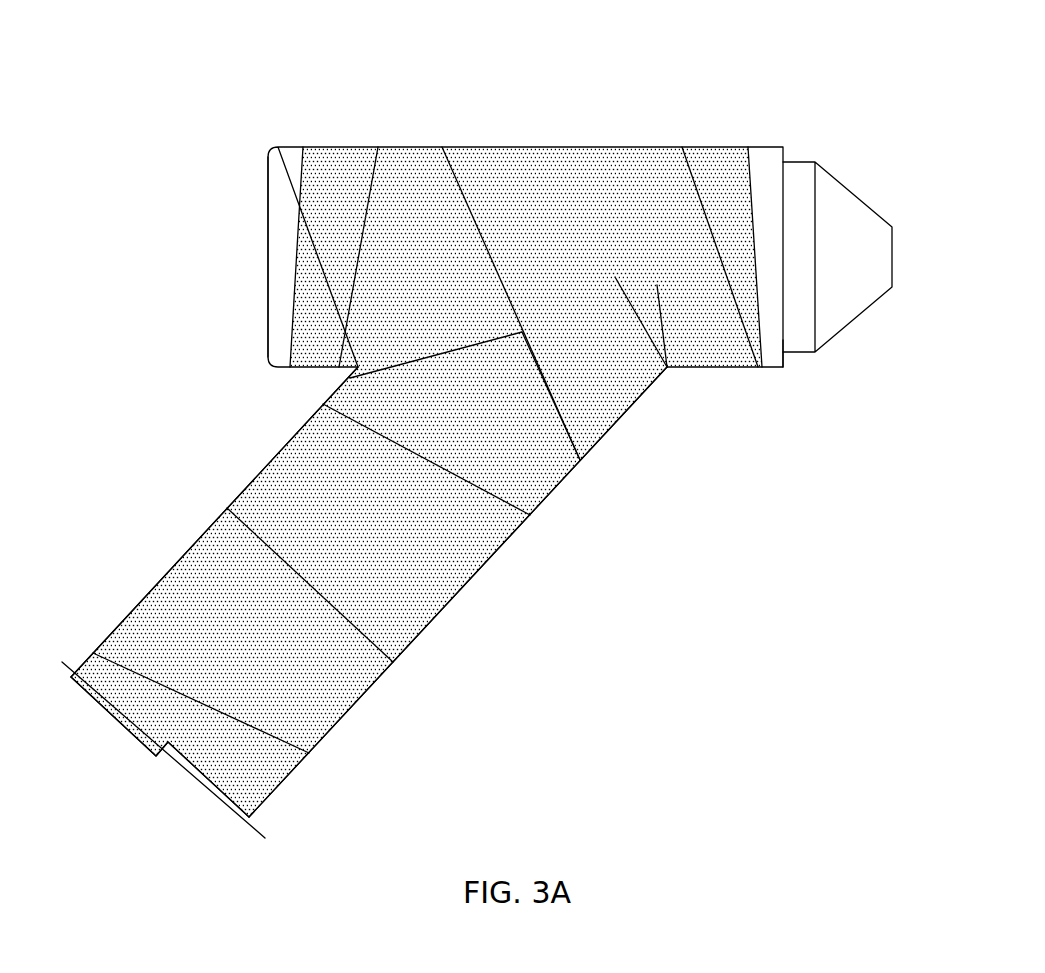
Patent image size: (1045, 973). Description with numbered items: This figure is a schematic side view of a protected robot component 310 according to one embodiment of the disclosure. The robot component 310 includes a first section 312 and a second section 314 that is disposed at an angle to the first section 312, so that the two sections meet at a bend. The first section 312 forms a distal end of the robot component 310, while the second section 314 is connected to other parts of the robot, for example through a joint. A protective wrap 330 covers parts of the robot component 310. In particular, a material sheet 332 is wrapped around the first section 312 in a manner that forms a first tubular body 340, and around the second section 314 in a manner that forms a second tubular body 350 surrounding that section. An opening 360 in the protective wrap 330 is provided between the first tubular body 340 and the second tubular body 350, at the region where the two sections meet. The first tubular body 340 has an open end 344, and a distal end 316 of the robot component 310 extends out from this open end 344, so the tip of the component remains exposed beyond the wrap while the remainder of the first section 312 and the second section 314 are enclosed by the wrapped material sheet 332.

The robot component 310 is at (679, 521).
The first section 312 is at (776, 114).
The second section 314 is at (439, 661).
The distal end 316 is at (845, 217).
The protective wrap 330 is at (335, 727).
The material sheet 332 is at (540, 448).
The first tubular body 340 is at (448, 97).
The open end 344 is at (789, 392).
The second tubular body 350 is at (275, 379).
The opening 360 is at (213, 243).